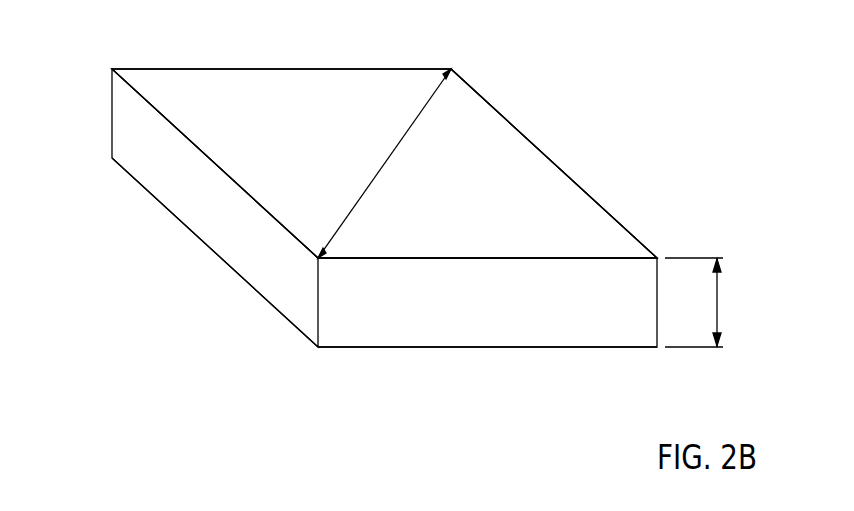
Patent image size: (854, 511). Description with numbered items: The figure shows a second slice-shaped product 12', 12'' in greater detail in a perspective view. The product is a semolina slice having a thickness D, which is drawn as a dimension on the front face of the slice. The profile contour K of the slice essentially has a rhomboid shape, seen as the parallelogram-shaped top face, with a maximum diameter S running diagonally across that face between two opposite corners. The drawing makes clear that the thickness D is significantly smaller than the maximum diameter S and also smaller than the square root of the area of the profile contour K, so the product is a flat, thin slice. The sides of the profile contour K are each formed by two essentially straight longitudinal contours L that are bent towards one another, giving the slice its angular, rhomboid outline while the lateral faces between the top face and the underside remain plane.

The second slice-shaped product 12' is at (384, 195).
The second slice-shaped product 12'' is at (384, 150).
The profile contour K is at (192, 148).
The longitudinal contours L is at (250, 272).
The maximum diameter S is at (387, 165).
The thickness D is at (718, 311).